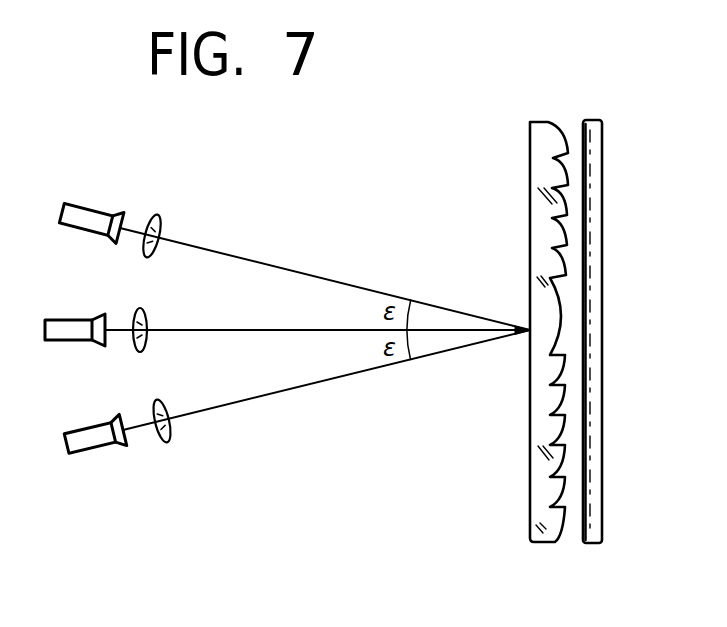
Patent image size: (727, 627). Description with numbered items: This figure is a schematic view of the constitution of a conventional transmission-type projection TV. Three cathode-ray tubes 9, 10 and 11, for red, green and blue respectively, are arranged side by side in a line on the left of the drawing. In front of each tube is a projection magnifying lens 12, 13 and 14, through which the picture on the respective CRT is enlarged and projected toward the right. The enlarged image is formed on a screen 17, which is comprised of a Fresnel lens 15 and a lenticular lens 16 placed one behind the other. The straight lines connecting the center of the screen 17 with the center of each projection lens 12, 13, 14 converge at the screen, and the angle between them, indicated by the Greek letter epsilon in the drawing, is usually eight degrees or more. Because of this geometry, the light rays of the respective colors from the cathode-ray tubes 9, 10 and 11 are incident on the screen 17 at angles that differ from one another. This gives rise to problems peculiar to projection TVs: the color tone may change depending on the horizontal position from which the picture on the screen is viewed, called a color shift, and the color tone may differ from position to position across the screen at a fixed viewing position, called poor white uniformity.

The cathode-ray tube 9 is at (97, 207).
The cathode-ray tube 10 is at (68, 318).
The cathode-ray tube 11 is at (84, 428).
The projection magnifying lens 12 is at (162, 230).
The projection magnifying lens 13 is at (148, 313).
The projection magnifying lens 14 is at (187, 398).
The Fresnel lens 15 is at (543, 120).
The lenticular lens 16 is at (597, 120).
The screen 17 is at (605, 65).